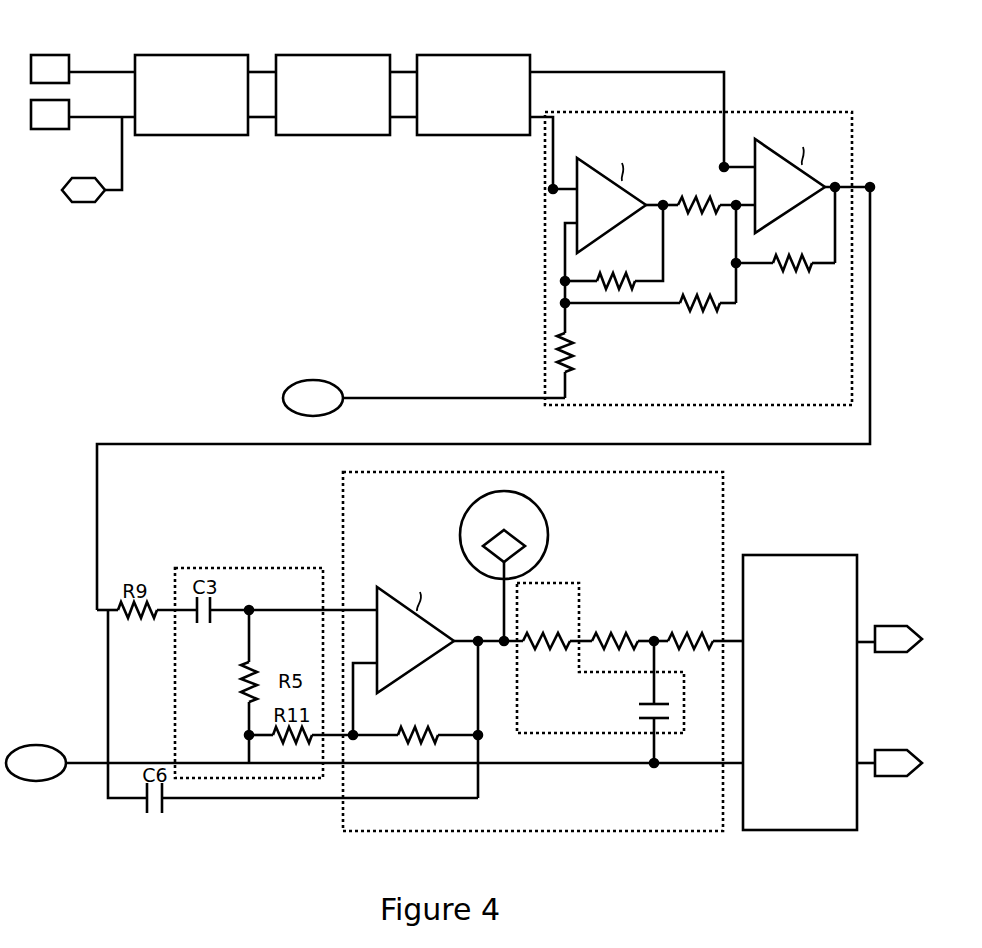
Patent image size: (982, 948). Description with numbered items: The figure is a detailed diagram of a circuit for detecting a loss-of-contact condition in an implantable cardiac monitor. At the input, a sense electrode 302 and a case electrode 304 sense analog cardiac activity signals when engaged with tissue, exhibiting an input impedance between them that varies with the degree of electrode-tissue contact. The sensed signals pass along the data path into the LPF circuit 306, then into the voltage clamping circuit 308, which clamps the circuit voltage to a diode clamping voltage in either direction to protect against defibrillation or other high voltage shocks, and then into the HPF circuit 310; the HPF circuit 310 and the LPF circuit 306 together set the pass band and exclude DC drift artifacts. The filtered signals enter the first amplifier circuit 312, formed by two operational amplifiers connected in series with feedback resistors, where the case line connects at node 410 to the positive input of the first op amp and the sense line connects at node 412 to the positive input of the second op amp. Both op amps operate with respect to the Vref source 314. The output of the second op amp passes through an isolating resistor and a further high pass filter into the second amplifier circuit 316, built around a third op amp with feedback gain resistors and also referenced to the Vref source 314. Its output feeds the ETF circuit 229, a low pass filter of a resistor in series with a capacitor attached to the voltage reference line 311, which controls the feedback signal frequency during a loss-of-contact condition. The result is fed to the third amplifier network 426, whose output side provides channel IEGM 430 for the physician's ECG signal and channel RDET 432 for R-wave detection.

The sense electrode 302 is at (58, 56).
The case electrode 304 is at (63, 130).
The LPF circuit 306 is at (228, 56).
The voltage clamping circuit 308 is at (370, 56).
The HPF circuit 310 is at (510, 56).
The first amplifier circuit 312 is at (855, 119).
The Vref source 314 is at (322, 382).
The voltage reference line 311 is at (376, 397).
The node 410 is at (553, 189).
The node 412 is at (724, 167).
The second amplifier circuit 316 is at (553, 649).
The ETF circuit 229 is at (578, 583).
The third amplifier network 426 is at (833, 555).
The channel IEGM 430 is at (894, 626).
The channel RDET 432 is at (894, 750).